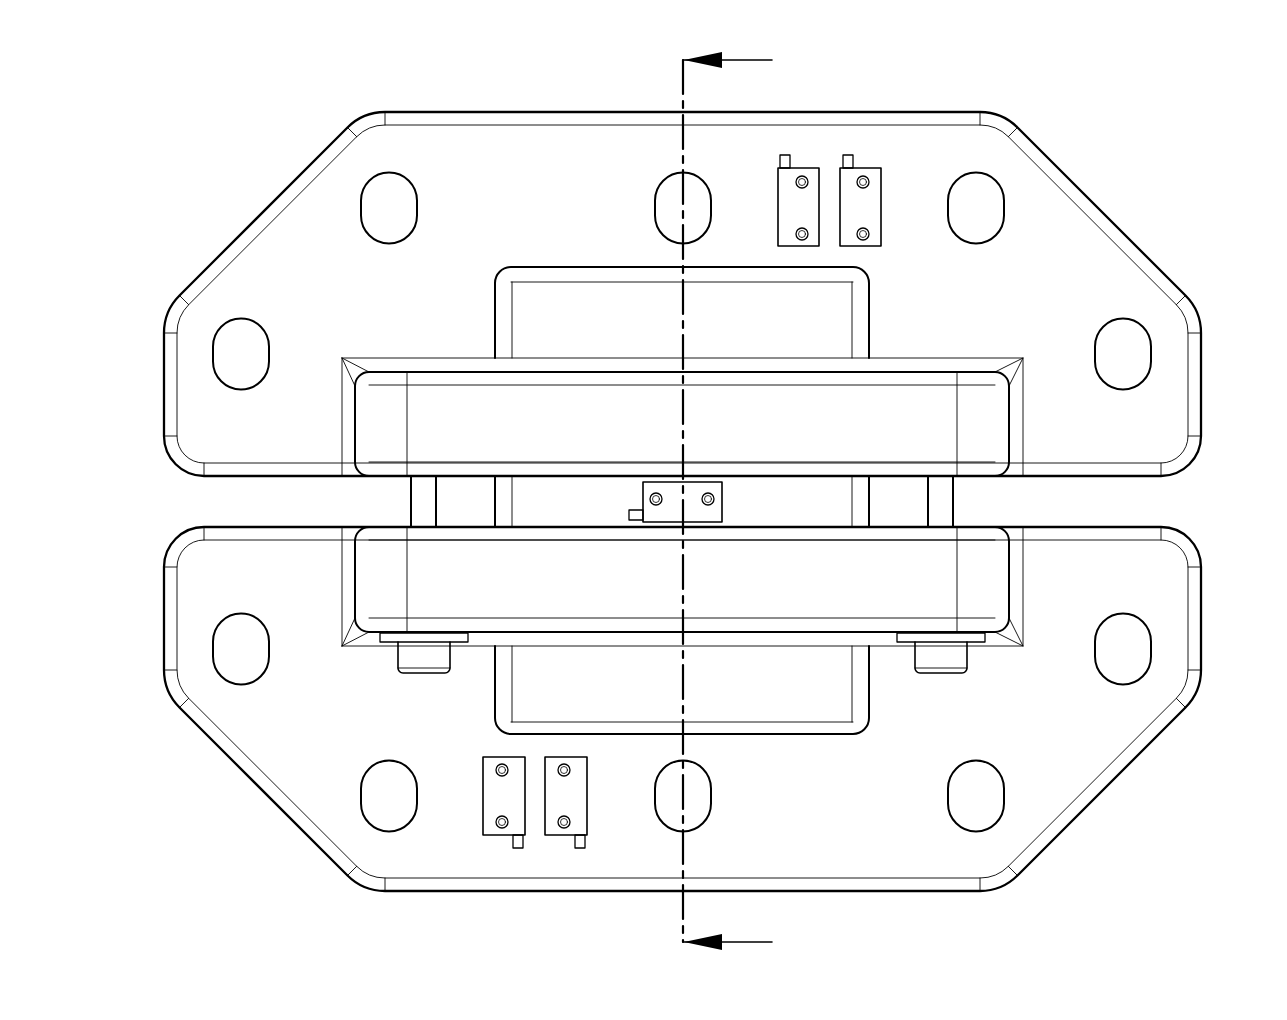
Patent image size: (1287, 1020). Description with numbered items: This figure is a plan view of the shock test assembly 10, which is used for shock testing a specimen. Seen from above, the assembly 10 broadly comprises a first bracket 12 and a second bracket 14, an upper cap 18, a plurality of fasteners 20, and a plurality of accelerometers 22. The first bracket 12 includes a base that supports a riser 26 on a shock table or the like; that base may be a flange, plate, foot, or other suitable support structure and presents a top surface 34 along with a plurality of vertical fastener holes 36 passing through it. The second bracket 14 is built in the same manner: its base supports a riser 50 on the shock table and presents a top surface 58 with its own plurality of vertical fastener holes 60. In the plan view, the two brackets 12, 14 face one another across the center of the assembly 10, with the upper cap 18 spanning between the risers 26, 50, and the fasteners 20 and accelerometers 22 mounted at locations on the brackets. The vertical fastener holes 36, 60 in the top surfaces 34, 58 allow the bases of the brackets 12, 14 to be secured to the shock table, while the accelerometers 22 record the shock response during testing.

The shock test assembly 10 is at (1126, 86).
The first bracket 12 is at (685, 747).
The second bracket 14 is at (686, 258).
The upper cap 18 is at (752, 719).
The fasteners 20 is at (396, 678).
The accelerometers 22 is at (808, 168).
The riser 26 is at (356, 579).
The top surface 34 is at (857, 872).
The vertical fastener holes 36 is at (371, 783).
The riser 50 is at (356, 425).
The top surface 58 is at (509, 132).
The vertical fastener holes 60 is at (356, 232).